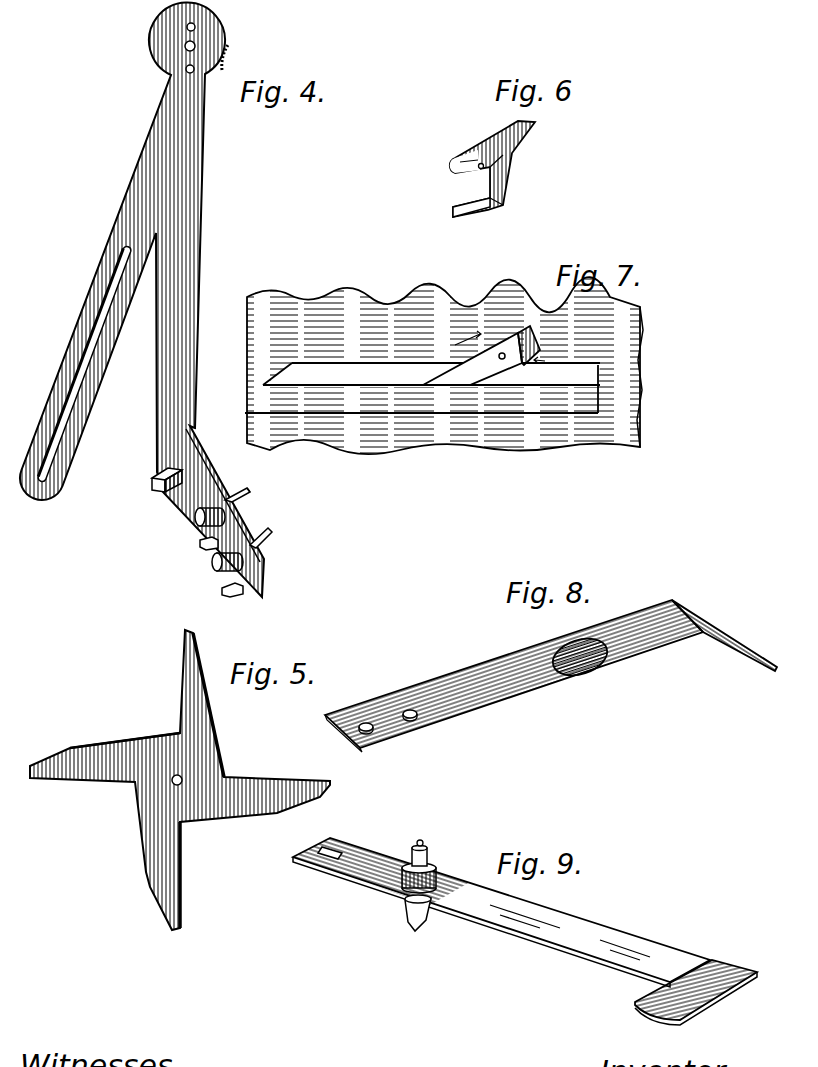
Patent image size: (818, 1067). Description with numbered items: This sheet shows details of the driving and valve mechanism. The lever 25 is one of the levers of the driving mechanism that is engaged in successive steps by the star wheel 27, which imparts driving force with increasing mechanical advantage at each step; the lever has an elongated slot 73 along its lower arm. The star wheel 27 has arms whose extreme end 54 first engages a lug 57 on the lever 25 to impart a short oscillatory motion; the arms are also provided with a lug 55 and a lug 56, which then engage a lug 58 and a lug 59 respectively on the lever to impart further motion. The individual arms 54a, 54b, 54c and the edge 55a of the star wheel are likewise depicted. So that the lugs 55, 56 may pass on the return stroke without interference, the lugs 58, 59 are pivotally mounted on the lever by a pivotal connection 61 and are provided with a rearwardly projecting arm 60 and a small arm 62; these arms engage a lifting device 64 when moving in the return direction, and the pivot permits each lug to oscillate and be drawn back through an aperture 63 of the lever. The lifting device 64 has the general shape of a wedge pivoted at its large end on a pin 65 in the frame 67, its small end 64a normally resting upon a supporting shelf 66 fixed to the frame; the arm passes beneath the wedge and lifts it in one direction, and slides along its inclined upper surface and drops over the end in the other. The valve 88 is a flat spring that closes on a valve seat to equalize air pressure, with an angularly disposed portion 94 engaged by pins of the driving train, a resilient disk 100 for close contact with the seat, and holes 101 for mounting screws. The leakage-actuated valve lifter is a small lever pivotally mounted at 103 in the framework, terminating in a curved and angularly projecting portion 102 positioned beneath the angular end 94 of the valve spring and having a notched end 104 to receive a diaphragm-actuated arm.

In FIG. 4, the lever 25 is at (180, 300).
In FIG. 4, the slot 73 is at (78, 386).
In FIG. 4, the lug 57 is at (157, 487).
In FIG. 4, the lug 58 is at (203, 541).
In FIG. 6, the lug 58 is at (462, 213).
In FIG. 4, the lug 59 is at (225, 592).
In FIG. 4, the rearwardly projecting arm 60 is at (253, 494).
In FIG. 6, the rearwardly projecting arm 60 is at (525, 138).
In FIG. 4, the pivotal connection 61 is at (225, 517).
In FIG. 6, the pivotal connection 61 is at (470, 172).
In FIG. 4, the small arm 62 is at (272, 538).
In FIG. 4, the aperture 63 is at (216, 563).
In FIG. 5, the star wheel 27 is at (182, 850).
In FIG. 5, the extreme end of arm 54 is at (196, 650).
In FIG. 5, the arm 54a is at (57, 770).
In FIG. 5, the arm 54b is at (181, 913).
In FIG. 5, the arm 54c is at (328, 783).
In FIG. 5, the lug 55 is at (216, 690).
In FIG. 5, the bevelled edge 55a is at (123, 738).
In FIG. 5, the lug 56 is at (214, 758).
In FIG. 7, the lifting device 64 is at (473, 368).
In FIG. 7, the small end of wedge 64a is at (442, 384).
In FIG. 7, the pin 65 is at (503, 352).
In FIG. 7, the supporting shelf 66 is at (547, 377).
In FIG. 7, the frame 67 is at (618, 350).
In FIG. 8, the valve 88 is at (500, 680).
In FIG. 8, the angularly disposed portion 94 is at (733, 643).
In FIG. 8, the disk of resilient material 100 is at (598, 673).
In FIG. 8, the holes 101 is at (363, 722).
In FIG. 9, the curved and angularly projecting portion 102 is at (668, 1018).
In FIG. 9, the pivot 103 is at (427, 845).
In FIG. 9, the notched end 104 is at (313, 857).